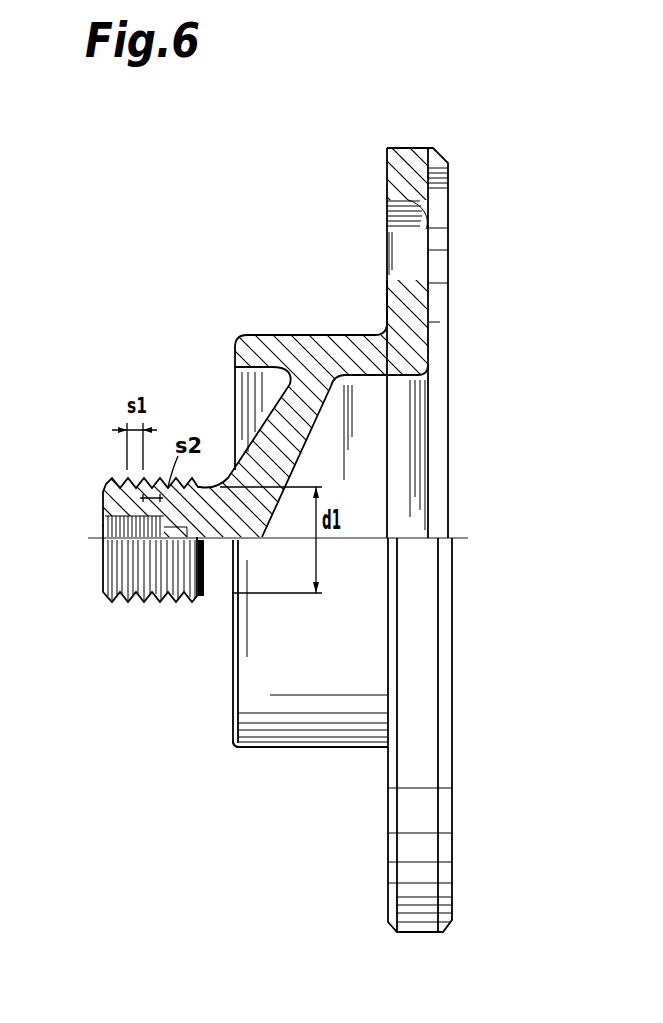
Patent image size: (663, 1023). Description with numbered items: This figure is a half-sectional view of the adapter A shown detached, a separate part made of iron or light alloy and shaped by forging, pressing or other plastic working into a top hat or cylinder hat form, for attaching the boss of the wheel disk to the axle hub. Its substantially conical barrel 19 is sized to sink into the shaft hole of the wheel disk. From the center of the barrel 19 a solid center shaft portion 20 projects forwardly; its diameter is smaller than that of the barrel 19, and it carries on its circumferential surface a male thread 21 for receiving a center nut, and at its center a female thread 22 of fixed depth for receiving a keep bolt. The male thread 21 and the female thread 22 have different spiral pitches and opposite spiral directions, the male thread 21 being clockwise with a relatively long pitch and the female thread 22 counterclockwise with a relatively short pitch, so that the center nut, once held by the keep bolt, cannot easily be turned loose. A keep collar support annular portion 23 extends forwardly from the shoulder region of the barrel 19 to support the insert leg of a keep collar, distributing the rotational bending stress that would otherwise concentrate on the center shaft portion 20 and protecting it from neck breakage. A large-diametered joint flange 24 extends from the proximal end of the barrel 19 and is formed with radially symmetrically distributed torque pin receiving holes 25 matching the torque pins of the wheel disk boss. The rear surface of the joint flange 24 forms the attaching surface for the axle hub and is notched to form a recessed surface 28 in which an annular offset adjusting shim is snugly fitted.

The conical barrel 19 is at (385, 376).
The center shaft portion 20 is at (222, 583).
The male thread 21 is at (162, 604).
The female thread 22 is at (103, 530).
The keep collar support annular portion 23 is at (243, 340).
The joint flange 24 is at (428, 717).
The torque pin receiving holes 25 is at (448, 231).
The recessed surface 28 is at (448, 184).
The adapter A is at (235, 747).